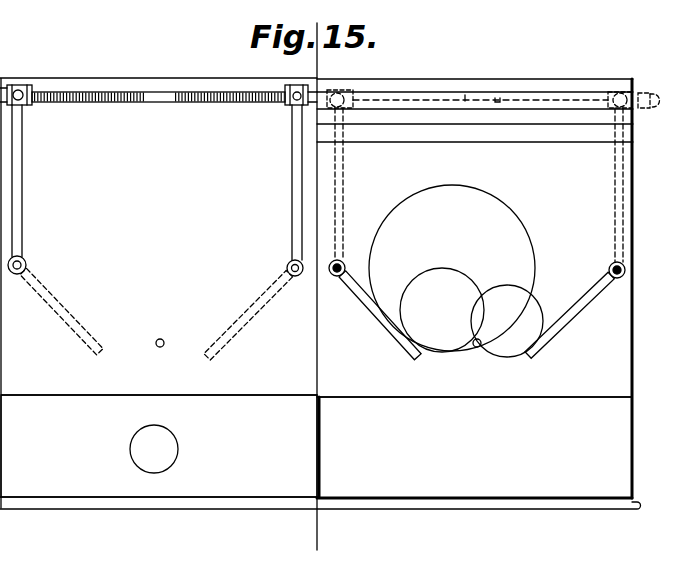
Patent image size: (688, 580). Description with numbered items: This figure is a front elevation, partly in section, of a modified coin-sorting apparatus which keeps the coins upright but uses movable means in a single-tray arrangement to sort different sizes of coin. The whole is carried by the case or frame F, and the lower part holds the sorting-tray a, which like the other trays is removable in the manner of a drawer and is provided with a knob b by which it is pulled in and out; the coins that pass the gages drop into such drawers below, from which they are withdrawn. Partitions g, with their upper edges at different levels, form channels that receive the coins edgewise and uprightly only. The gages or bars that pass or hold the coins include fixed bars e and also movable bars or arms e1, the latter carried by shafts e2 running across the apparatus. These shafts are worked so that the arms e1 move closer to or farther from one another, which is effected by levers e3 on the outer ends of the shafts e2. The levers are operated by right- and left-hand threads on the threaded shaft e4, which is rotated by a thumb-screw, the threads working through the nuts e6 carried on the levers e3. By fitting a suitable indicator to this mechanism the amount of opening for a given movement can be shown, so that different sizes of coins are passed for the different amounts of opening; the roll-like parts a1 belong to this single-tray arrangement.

The case or frame F is at (329, 276).
The sorting-tray a is at (316, 446).
The roll (a') a1 is at (456, 271).
The knob b is at (172, 444).
The gage or bar e is at (157, 347).
The movable bar or arm e1 is at (77, 338).
The shaft e2 is at (26, 262).
The lever e3 is at (20, 157).
The threaded shaft e4 is at (97, 92).
The nut e6 is at (25, 85).
The partition g is at (418, 92).